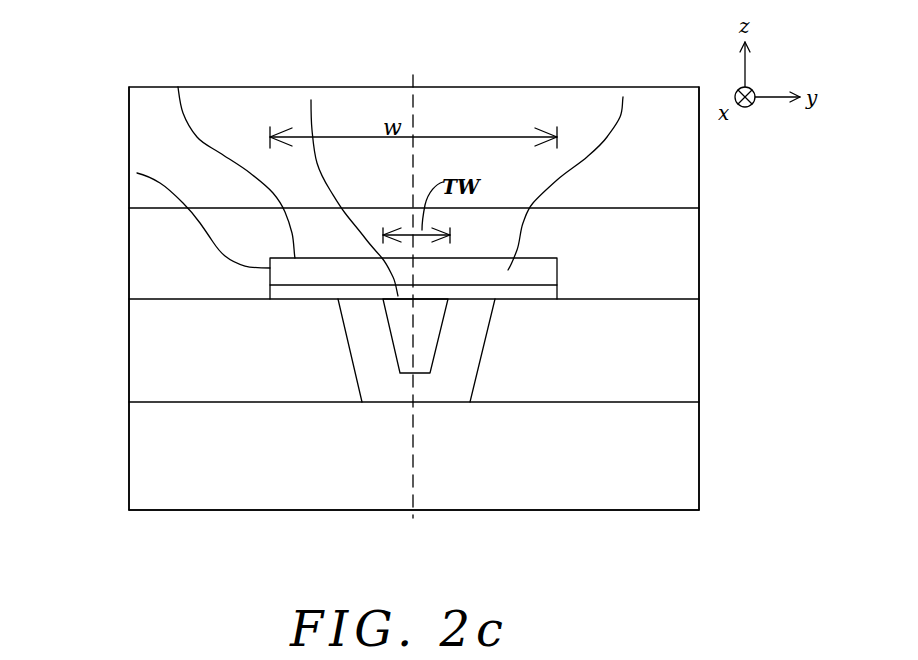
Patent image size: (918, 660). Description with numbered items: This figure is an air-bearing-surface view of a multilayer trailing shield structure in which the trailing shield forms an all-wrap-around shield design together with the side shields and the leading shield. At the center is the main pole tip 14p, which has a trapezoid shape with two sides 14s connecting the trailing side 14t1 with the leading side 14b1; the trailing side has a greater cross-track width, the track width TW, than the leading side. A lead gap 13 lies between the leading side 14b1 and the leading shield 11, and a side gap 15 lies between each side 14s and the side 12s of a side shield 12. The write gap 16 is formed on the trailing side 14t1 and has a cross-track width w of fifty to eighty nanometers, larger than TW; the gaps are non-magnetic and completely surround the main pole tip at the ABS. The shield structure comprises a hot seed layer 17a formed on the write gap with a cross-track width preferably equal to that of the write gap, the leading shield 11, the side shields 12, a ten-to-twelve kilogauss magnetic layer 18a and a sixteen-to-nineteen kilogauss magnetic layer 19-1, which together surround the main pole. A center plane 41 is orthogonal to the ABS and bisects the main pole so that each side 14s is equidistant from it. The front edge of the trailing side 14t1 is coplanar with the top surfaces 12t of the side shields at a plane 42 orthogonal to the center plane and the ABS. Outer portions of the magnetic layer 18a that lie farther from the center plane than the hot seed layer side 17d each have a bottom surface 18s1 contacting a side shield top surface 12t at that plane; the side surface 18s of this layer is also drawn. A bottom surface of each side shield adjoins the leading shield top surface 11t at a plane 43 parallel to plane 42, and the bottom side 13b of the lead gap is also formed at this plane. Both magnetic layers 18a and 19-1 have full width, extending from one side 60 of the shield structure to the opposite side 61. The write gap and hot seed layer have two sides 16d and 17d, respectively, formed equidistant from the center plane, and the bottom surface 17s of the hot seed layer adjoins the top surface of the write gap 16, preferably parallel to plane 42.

The leading shield 11 is at (683, 467).
The leading shield top surface 11t is at (230, 400).
The side shield 12 is at (187, 395).
The side shield side 12s is at (475, 380).
The side shield top surface 12t is at (658, 299).
The lead gap 13 is at (405, 390).
The bottom side of lead gap 13b is at (402, 343).
The leading side 14b1 is at (422, 375).
The main pole tip 14p is at (403, 345).
The main pole tip side 14s is at (445, 322).
The trailing side 14t1 is at (311, 100).
The side gap 15 is at (360, 338).
The write gap 16 is at (292, 293).
The write gap side 16d is at (557, 289).
The hot seed layer 17a is at (623, 97).
The hot seed layer side 17d is at (137, 173).
The hot seed layer bottom surface 17s is at (537, 278).
The 10-12 kG magnetic layer 18a is at (147, 212).
The side surface of layer 18 18s is at (178, 87).
The bottom surface of 10-12 kG magnetic layer outer portion 18s1 is at (167, 299).
The 16-19 kG magnetic layer 19-1 is at (147, 97).
The center plane 41 is at (414, 302).
The plane 42- 42 is at (121, 299).
The plane 43- 43 is at (121, 402).
The side of shield structure 60 is at (130, 139).
The opposite side of shield structure 61 is at (699, 162).